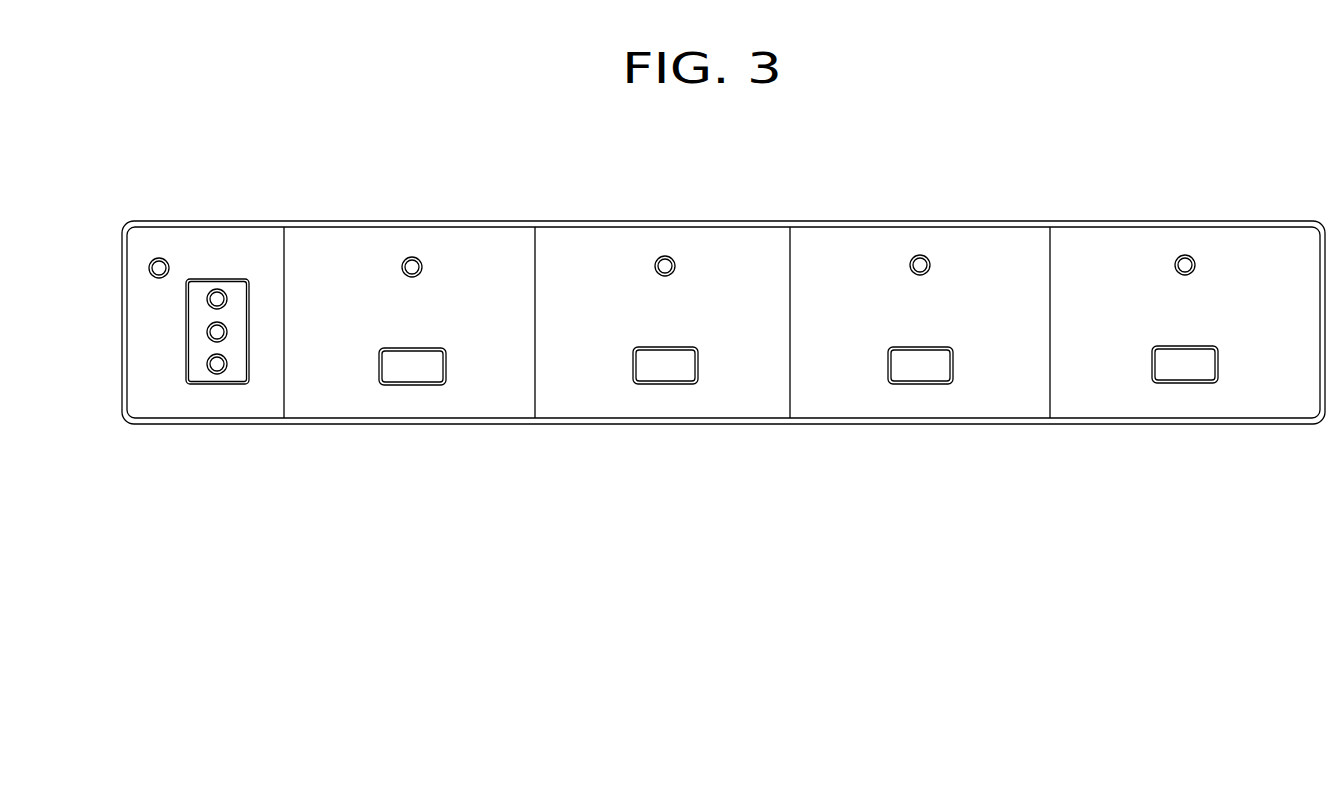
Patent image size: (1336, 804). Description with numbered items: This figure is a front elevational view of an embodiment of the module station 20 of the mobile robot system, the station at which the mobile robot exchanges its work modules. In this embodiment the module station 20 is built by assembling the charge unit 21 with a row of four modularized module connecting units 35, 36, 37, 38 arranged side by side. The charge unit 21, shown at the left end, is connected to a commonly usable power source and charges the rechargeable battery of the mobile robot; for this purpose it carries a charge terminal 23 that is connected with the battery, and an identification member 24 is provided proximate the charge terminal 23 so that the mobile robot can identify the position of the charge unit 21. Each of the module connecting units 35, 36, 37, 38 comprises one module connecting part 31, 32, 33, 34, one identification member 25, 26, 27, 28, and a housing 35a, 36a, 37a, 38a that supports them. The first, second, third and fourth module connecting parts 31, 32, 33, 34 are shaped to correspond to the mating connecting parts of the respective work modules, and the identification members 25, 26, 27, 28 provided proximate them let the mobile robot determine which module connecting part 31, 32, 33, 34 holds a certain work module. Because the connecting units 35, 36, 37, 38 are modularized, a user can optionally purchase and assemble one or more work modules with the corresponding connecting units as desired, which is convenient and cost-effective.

The module station 20 is at (723, 322).
The charge unit 21 is at (218, 258).
The charge terminal 23 is at (211, 297).
The identification member 24 is at (156, 257).
The identification member 25 is at (409, 256).
The identification member 26 is at (662, 255).
The identification member 27 is at (917, 254).
The identification member 28 is at (1182, 254).
The first module connecting part 31 is at (413, 372).
The second module connecting part 32 is at (666, 372).
The third module connecting part 33 is at (923, 372).
The fourth module connecting part 34 is at (1186, 372).
The module connecting unit 35 is at (478, 214).
The module connecting unit 36 is at (731, 214).
The module connecting unit 37 is at (992, 214).
The module connecting unit 38 is at (1253, 214).
The housing 35a is at (323, 390).
The housing 36a is at (577, 390).
The housing 37a is at (832, 390).
The housing 38a is at (1093, 390).